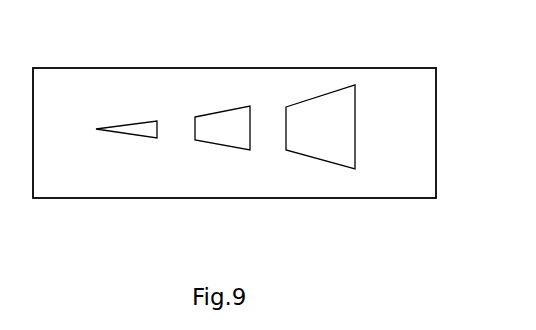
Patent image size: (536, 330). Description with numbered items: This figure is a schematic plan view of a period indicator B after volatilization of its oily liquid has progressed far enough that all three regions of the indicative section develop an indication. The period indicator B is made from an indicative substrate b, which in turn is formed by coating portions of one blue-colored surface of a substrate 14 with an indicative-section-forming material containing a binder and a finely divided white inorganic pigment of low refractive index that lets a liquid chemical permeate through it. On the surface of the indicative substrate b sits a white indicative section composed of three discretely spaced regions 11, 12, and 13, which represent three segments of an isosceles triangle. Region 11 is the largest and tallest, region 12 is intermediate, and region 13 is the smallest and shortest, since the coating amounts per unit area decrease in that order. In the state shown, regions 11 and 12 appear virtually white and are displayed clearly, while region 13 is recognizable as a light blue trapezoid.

The region 11 is at (318, 134).
The region 12 is at (223, 138).
The region 13 is at (142, 135).
The substrate 14 is at (397, 167).
The period indicator B is at (123, 55).
The indicative substrate b is at (250, 68).